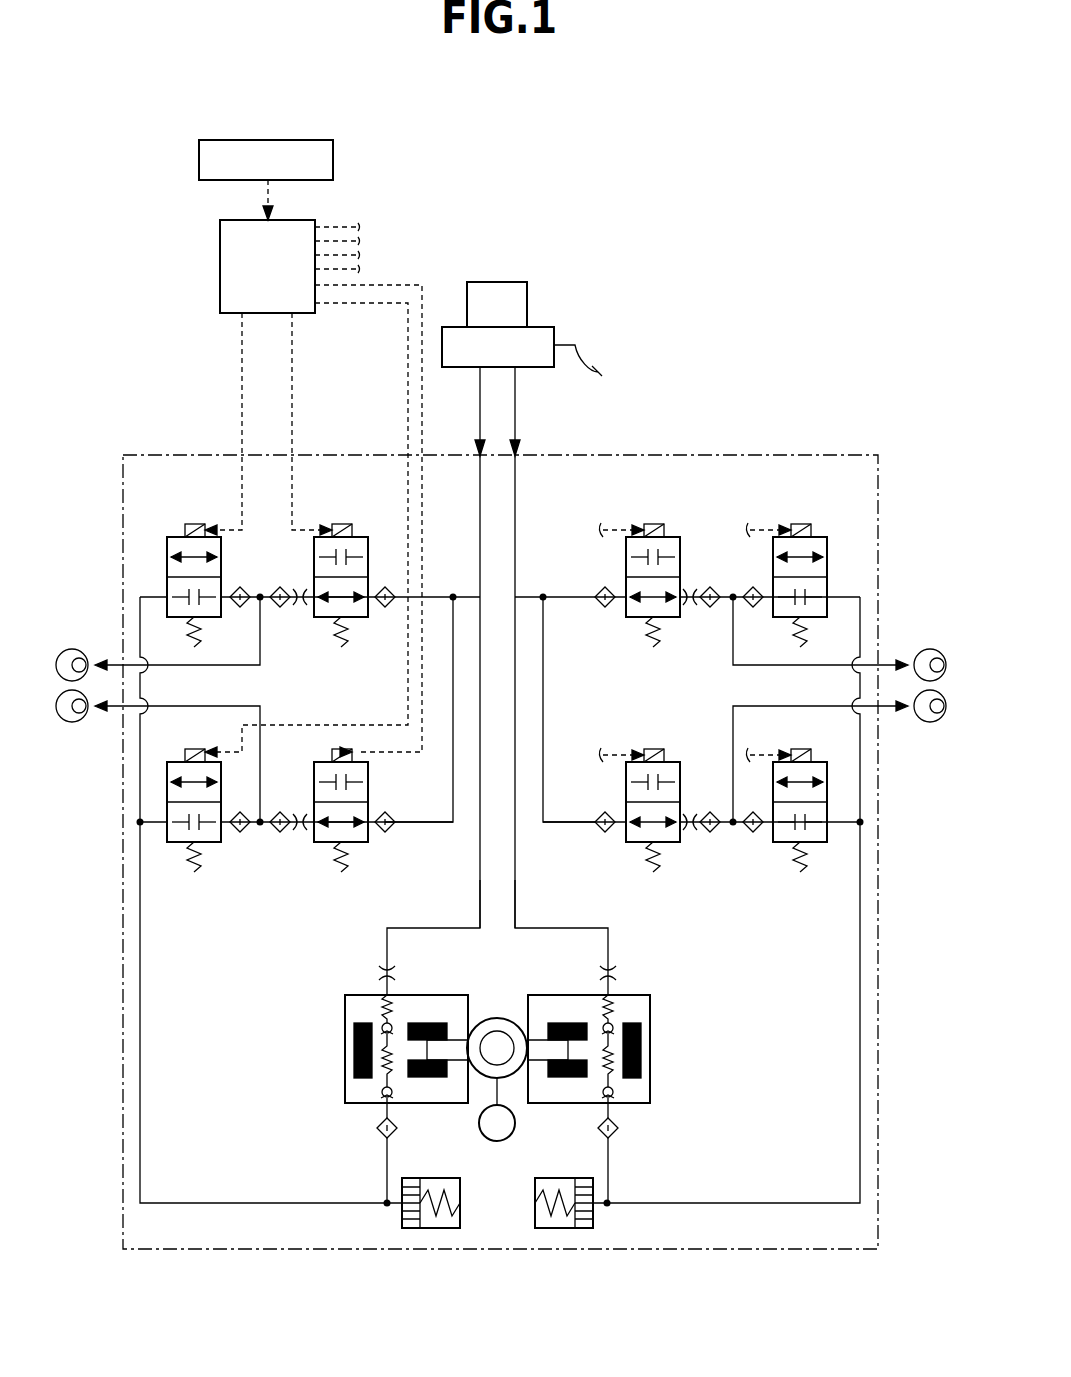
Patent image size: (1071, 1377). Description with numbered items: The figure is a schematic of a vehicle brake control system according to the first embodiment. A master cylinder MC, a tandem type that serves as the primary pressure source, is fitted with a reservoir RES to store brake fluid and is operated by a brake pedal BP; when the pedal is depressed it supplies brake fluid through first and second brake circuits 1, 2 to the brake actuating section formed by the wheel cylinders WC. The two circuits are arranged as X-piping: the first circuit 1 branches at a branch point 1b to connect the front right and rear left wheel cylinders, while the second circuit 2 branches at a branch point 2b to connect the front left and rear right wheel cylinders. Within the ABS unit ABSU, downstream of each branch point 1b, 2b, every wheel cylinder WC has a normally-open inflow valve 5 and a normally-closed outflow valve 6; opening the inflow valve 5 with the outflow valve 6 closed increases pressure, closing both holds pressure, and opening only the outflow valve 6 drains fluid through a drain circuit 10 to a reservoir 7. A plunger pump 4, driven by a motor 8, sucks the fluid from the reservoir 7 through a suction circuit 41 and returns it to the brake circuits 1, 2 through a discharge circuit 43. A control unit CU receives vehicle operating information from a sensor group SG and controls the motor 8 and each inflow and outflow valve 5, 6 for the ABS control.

The first brake circuit 1 is at (515, 522).
The second brake circuit 2 is at (480, 522).
The branch point 1b is at (543, 590).
The branch point 2b is at (453, 590).
The pump 4 is at (497, 1018).
The inflow valve 5 is at (359, 535).
The outflow valve 6 is at (177, 535).
The reservoir 7 is at (535, 1187).
The motor 8 is at (479, 1123).
The drain circuit 10 is at (246, 1200).
The suction circuit 41 is at (386, 1177).
The discharge circuit 43 is at (480, 898).
The sensor group SG is at (333, 150).
The control unit CU is at (313, 488).
The reservoir RES is at (527, 292).
The master cylinder MC is at (554, 332).
The brake pedal BP is at (604, 366).
The ABS unit ABSU is at (738, 456).
The wheel cylinder WC is at (501, 709).